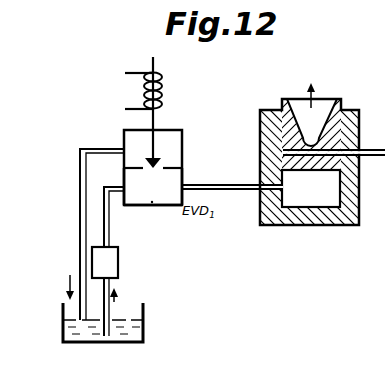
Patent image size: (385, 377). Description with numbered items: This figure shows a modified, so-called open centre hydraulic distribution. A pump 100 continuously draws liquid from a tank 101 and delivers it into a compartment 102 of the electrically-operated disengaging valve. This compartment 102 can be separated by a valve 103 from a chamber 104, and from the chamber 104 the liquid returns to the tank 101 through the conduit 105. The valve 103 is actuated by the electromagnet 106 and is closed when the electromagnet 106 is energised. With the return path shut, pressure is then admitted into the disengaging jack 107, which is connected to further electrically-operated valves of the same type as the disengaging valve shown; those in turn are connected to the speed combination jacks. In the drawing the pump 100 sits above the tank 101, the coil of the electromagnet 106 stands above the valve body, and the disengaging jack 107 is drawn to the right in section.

The pump 100 is at (118, 267).
The tank 101 is at (143, 323).
The compartment 102 is at (153, 186).
The valve 103 is at (160, 165).
The chamber 104 is at (172, 143).
The conduit 105 is at (86, 216).
The electromagnet 106 is at (161, 93).
The disengaging jack 107 is at (327, 207).